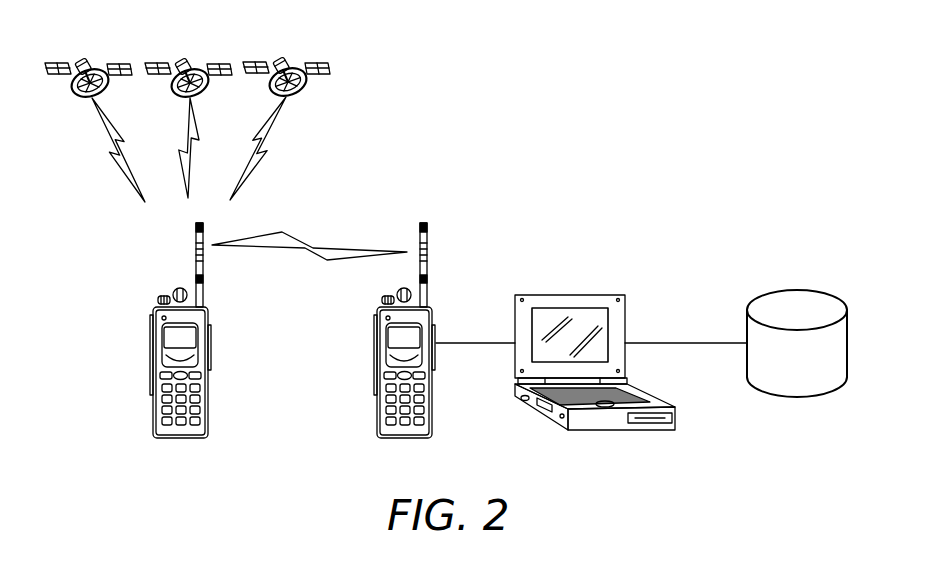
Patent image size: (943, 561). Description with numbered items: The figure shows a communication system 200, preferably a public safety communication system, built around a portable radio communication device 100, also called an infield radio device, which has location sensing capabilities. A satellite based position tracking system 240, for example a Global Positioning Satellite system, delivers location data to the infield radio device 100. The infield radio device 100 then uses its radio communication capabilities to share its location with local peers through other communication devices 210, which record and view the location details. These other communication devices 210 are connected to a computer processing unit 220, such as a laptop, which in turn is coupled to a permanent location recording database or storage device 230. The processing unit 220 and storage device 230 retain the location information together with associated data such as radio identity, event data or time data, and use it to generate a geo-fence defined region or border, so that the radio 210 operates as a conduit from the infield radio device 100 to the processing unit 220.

The portable radio communication device 100 is at (153, 356).
The communication system 200 is at (794, 500).
The other communication devices 210 is at (377, 356).
The computer processing unit 220 is at (570, 295).
The storage device 230 is at (797, 290).
The satellite based position tracking system 240 is at (360, 73).